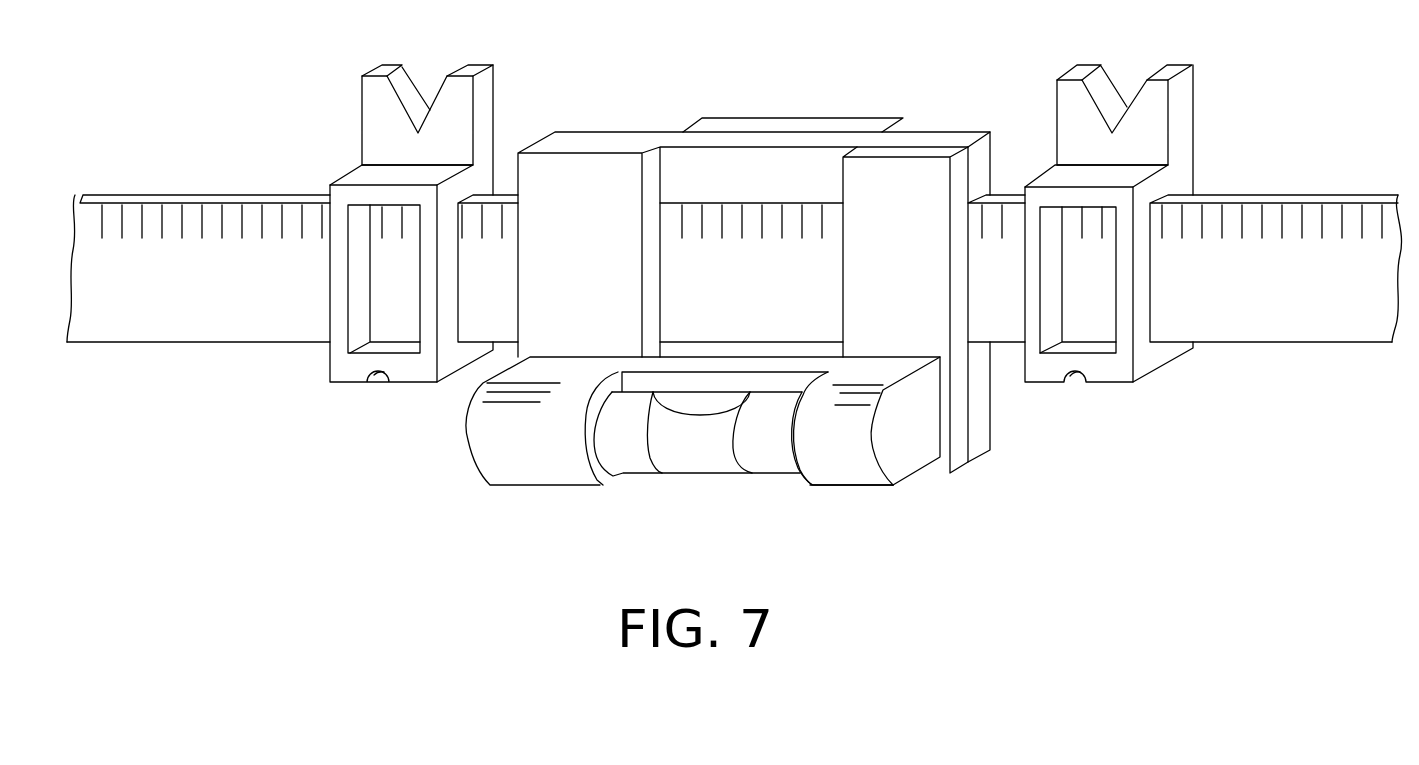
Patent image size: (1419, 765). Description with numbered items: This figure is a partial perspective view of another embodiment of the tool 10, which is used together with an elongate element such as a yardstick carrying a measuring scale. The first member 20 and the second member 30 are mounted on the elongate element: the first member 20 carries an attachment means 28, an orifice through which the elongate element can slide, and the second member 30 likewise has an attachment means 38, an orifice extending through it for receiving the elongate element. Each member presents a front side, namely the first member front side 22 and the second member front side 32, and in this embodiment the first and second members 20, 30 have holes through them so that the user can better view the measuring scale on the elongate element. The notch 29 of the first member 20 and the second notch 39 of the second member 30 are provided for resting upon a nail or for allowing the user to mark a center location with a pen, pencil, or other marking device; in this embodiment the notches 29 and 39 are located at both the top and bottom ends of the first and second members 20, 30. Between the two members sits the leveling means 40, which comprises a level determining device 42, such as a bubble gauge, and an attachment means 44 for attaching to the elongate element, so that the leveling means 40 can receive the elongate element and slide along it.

The tool 10 is at (985, 562).
The first member 20 is at (447, 365).
The first member front side 22 is at (340, 230).
The attachment means 28 is at (460, 258).
The notch 29 is at (427, 83).
The second member 30 is at (1153, 353).
The second member front side 32 is at (1127, 250).
The attachment means 38 is at (1158, 277).
The second notch 39 is at (1125, 77).
The leveling means 40 is at (978, 167).
The level determining device 42 is at (762, 463).
The attachment means 44 is at (978, 277).